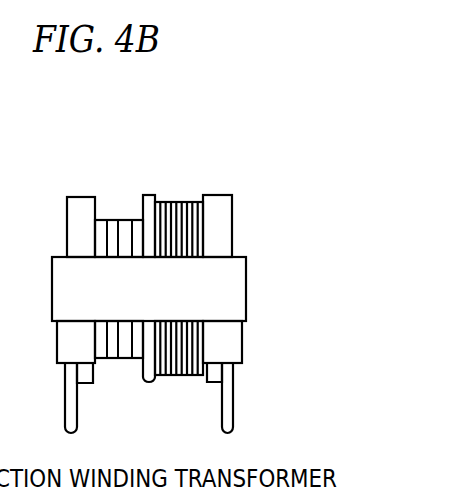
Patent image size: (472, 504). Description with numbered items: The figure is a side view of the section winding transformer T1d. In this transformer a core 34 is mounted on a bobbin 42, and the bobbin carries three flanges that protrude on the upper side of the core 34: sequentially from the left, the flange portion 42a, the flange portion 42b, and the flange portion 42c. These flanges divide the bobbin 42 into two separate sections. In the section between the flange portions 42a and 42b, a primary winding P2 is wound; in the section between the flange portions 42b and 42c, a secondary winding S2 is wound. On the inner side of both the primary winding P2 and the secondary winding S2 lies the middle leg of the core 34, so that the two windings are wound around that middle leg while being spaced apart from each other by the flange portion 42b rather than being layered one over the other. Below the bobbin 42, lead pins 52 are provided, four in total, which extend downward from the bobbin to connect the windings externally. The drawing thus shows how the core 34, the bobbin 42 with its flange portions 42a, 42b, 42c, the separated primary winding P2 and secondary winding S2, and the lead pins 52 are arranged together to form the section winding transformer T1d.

The section winding transformer T1d is at (259, 159).
The core 34 is at (248, 290).
The bobbin 42 is at (243, 338).
The flange portion 42a is at (83, 197).
The flange portion 42b is at (152, 196).
The flange portion 42c is at (223, 196).
The lead pins 52 is at (233, 398).
The primary winding P2 is at (122, 220).
The secondary winding S2 is at (183, 202).